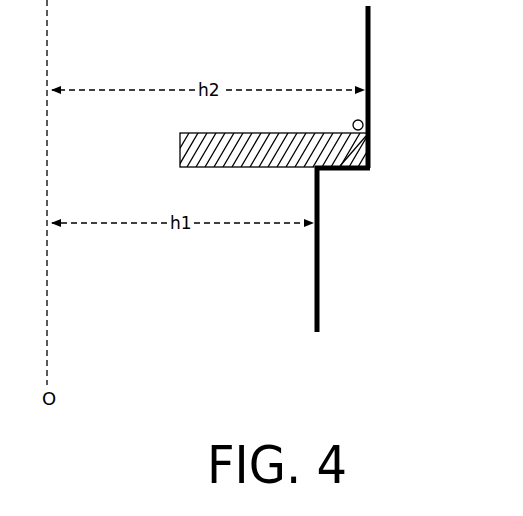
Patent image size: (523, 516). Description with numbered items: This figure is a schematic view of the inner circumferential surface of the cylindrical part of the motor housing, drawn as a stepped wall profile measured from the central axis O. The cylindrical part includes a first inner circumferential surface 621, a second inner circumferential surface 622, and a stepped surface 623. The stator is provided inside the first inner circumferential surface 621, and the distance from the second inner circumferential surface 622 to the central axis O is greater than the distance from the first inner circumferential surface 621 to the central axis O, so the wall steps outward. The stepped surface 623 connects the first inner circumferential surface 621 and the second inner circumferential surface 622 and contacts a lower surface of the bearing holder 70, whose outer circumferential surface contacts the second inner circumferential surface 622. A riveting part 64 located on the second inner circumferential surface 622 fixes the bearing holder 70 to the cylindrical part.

The first inner circumferential surface 621 is at (284, 298).
The second inner circumferential surface 622 is at (365, 63).
The stepped surface 623 is at (371, 171).
The riveting part 64 is at (370, 115).
The bearing holder 70 is at (343, 161).